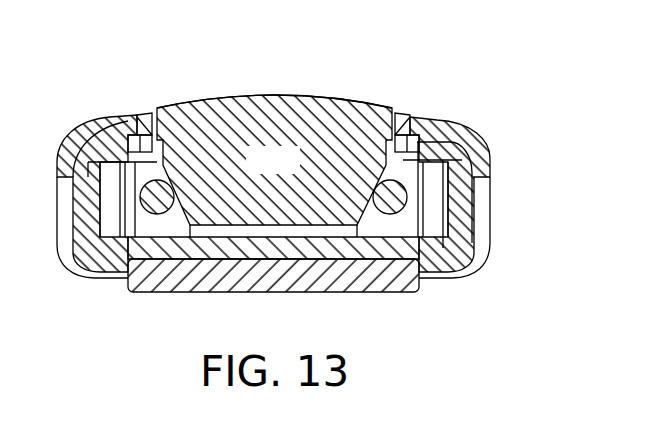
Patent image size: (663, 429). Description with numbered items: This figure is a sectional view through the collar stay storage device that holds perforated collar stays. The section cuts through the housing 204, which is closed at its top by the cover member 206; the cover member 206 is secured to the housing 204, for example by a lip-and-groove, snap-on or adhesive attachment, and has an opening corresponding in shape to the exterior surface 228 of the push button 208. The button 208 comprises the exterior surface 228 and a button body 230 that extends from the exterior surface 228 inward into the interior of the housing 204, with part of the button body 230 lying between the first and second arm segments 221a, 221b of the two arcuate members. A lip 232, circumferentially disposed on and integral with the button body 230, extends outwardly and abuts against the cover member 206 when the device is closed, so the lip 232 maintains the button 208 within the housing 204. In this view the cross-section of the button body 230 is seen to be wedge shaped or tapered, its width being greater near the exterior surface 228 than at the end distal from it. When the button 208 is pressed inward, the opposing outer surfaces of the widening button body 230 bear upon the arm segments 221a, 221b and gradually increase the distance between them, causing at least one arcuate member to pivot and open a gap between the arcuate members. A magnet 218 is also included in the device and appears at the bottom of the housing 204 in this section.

The housing 204 is at (485, 240).
The cover member 206 is at (490, 178).
The push button 208 is at (348, 78).
The magnet 218 is at (146, 290).
The first arm segment 221a is at (388, 205).
The second arm segment 221b is at (160, 205).
The exterior surface 228 is at (238, 95).
The button body 230 is at (297, 171).
The lip 232 is at (140, 120).